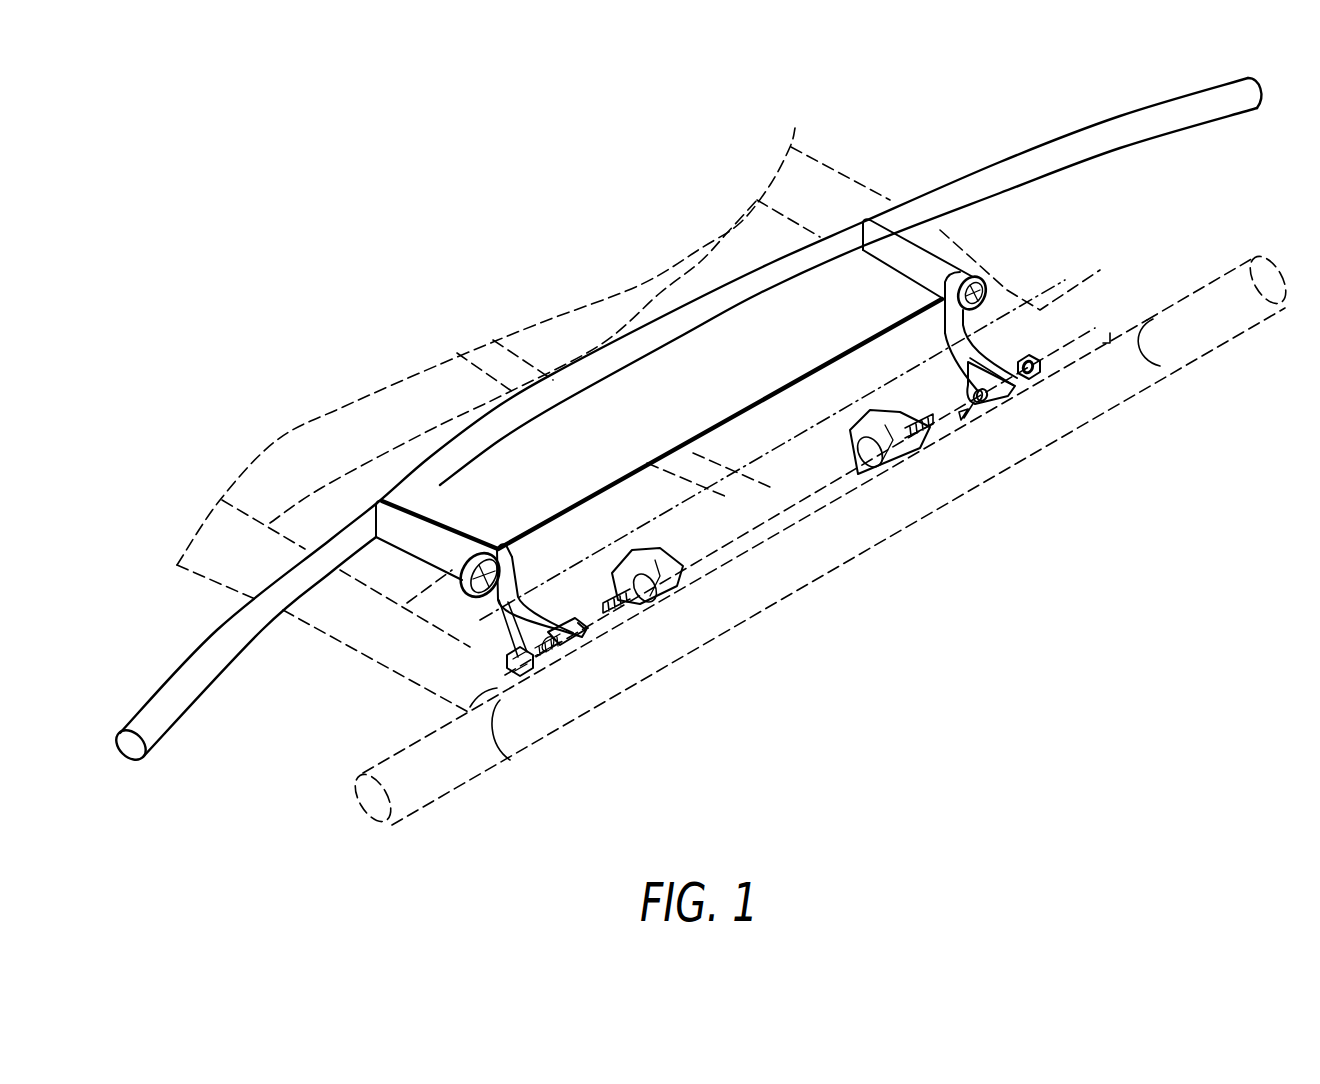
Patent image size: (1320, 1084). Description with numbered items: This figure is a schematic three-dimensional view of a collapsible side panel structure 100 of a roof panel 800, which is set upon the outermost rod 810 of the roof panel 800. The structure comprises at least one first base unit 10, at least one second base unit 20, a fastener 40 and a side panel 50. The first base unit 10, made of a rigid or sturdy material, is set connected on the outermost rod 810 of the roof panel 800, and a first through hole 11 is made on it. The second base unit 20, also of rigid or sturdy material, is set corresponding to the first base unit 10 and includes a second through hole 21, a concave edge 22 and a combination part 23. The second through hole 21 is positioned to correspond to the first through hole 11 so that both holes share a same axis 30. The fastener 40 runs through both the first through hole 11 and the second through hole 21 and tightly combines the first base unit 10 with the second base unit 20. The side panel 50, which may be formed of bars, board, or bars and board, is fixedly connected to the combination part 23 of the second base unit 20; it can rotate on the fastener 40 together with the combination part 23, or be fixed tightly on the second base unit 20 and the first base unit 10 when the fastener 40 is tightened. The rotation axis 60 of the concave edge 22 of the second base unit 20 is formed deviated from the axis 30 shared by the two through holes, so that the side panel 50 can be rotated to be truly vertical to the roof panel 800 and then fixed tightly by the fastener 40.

The collapsible side panel structure 100 is at (993, 183).
The side panel 50 is at (663, 358).
The roof panel 800 is at (838, 187).
The outermost rod 810 is at (1128, 385).
The second base unit 20 is at (703, 543).
The concave edge 22 is at (497, 565).
The combination part 23 is at (477, 560).
The second through hole 21 is at (530, 677).
The first base unit 10 is at (567, 640).
The first through hole 11 is at (590, 620).
The fastener 40 is at (677, 573).
The axis 30 is at (1090, 330).
The rotation axis 60 is at (1017, 300).